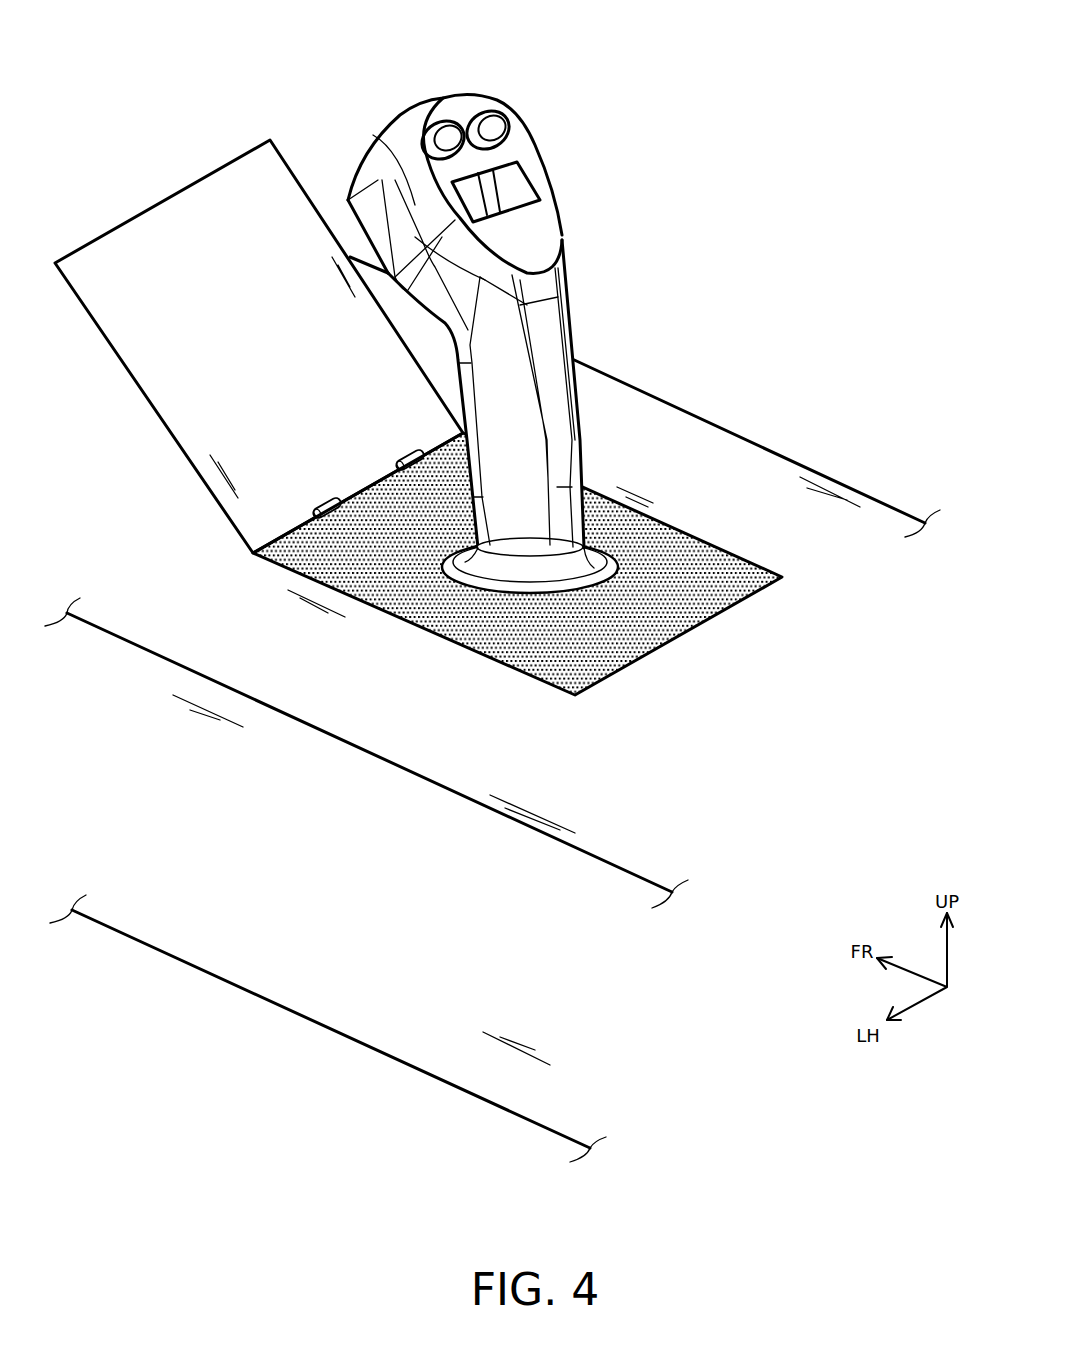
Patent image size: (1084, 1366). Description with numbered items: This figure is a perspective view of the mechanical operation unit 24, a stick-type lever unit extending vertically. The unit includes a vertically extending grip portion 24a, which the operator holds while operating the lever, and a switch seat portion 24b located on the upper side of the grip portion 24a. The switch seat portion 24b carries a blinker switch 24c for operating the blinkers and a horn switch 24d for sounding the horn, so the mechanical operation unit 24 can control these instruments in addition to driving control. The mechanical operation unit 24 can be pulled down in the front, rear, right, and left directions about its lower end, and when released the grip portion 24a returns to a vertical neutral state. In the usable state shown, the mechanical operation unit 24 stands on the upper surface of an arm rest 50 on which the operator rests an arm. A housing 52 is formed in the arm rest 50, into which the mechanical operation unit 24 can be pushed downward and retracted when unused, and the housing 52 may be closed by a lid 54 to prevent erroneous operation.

The mechanical operation unit 24 is at (557, 306).
The grip portion 24a is at (597, 395).
The switch seat portion 24b is at (540, 220).
The blinker switch 24c is at (448, 130).
The horn switch 24d is at (539, 180).
The arm rest 50 is at (775, 495).
The housing 52 is at (676, 585).
The lid 54 is at (212, 233).